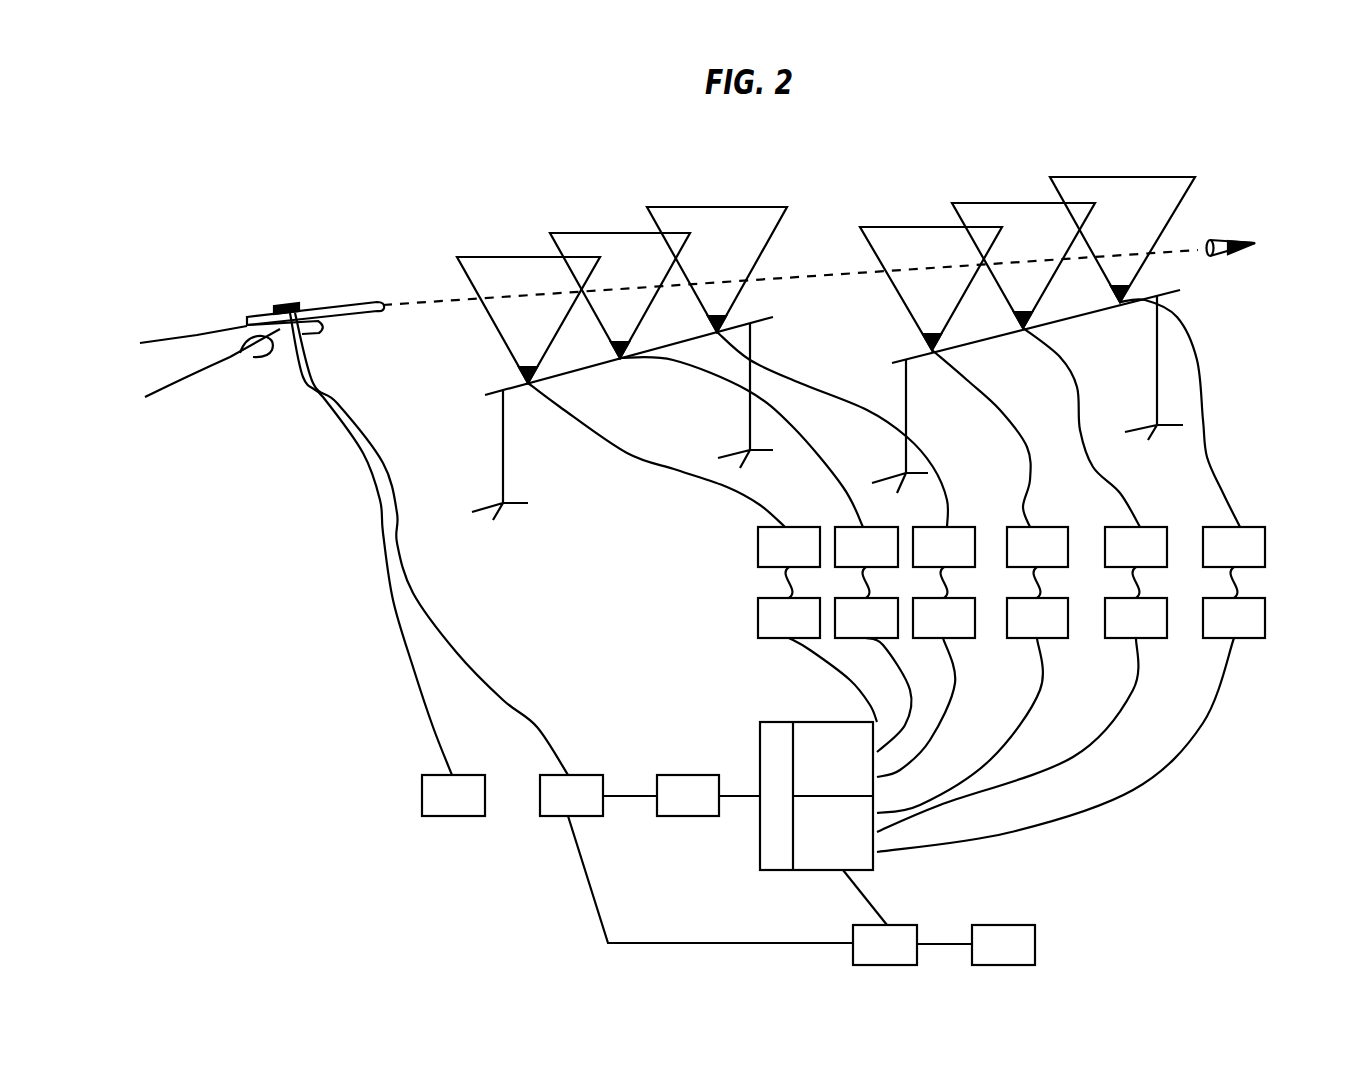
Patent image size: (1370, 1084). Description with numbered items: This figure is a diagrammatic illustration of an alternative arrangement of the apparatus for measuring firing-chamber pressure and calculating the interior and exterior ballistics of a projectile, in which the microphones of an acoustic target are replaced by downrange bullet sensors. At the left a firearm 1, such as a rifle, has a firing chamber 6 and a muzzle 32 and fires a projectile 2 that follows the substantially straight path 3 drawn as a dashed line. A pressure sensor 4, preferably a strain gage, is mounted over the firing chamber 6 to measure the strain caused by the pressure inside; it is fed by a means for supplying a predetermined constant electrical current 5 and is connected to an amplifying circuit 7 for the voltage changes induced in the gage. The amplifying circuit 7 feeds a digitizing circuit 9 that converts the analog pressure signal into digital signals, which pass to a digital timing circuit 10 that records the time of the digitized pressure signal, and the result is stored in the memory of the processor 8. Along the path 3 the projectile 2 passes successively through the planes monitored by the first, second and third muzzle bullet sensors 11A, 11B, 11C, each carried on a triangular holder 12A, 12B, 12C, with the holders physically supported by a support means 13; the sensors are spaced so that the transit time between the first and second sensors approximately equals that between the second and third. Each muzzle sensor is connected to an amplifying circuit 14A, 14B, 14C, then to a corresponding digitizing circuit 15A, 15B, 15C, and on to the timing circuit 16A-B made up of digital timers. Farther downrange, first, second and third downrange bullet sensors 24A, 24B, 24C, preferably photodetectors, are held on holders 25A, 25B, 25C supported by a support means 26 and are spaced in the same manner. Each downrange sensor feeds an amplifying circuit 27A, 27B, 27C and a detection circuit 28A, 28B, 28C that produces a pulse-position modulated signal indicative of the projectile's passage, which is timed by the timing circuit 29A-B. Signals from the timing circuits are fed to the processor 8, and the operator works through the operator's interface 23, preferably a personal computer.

The firearm 1 is at (170, 318).
The projectile 2 is at (1228, 243).
The path 3 is at (786, 274).
The pressure sensor 4 is at (290, 305).
The means for supplying a predetermined constant electrical current 5 is at (453, 795).
The firing chamber 6 is at (283, 320).
The amplifying circuit 7 is at (571, 795).
The processor 8 is at (885, 945).
The digitizing circuit 9 is at (688, 795).
The digital timing circuit 10 is at (816, 796).
The first muzzle bullet sensor 11A is at (520, 375).
The second muzzle bullet sensor 11B is at (615, 353).
The third muzzle bullet sensor 11C is at (730, 322).
The holder 12A is at (480, 257).
The holder 12B is at (573, 233).
The holder 12C is at (668, 207).
The support means 13 is at (595, 367).
The amplifying circuit 14A is at (789, 547).
The amplifying circuit 14B is at (866, 547).
The amplifying circuit 14C is at (944, 547).
The digitizing circuit 15A is at (789, 618).
The digitizing circuit 15B is at (866, 618).
The digitizing circuit 15C is at (944, 618).
The timing circuit 16A-B is at (833, 757).
The operator's interface 23 is at (1003, 945).
The first downrange bullet sensor 24A is at (928, 345).
The second downrange bullet sensor 24B is at (1020, 318).
The third downrange bullet sensor 24C is at (1130, 290).
The holder 25A is at (887, 227).
The holder 25B is at (980, 203).
The holder 25C is at (1078, 177).
The support means 26 is at (1063, 320).
The amplifying circuit 27A is at (1037, 547).
The amplifying circuit 27B is at (1136, 547).
The amplifying circuit 27C is at (1234, 547).
The detection circuit 28A is at (1037, 618).
The detection circuit 28B is at (1136, 618).
The detection circuit 28C is at (1234, 618).
The timing circuit 29A-B is at (833, 830).
The muzzle 32 is at (385, 300).